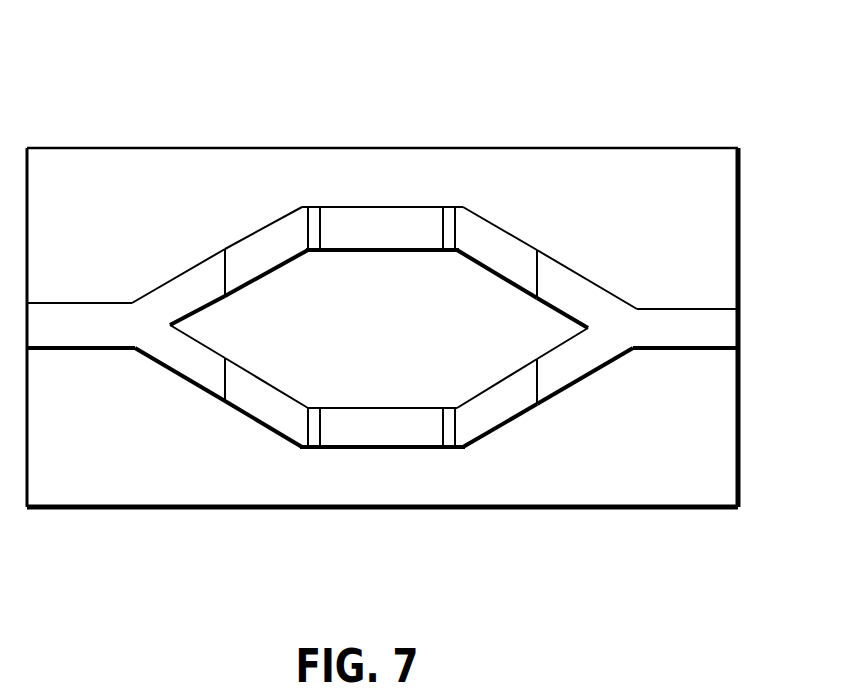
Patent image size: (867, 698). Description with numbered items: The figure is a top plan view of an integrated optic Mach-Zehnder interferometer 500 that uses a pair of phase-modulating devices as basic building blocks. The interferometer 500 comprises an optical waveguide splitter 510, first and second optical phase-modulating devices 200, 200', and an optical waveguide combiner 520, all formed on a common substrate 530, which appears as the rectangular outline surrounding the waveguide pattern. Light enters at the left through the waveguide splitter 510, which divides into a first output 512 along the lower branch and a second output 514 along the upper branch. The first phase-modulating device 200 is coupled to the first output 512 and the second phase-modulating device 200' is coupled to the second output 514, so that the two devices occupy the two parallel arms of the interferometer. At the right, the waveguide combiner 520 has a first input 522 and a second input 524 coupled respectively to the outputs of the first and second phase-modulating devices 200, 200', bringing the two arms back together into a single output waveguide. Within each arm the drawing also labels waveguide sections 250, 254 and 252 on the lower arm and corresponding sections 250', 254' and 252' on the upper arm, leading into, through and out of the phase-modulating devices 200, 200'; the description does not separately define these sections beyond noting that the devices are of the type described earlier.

The integrated optic Mach-Zehnder interferometer 500 is at (415, 304).
The optical waveguide splitter 510 is at (133, 327).
The first output of the waveguide splitter 512 is at (205, 372).
The second output of the waveguide splitter 514 is at (197, 287).
The optical waveguide combiner 520 is at (638, 327).
The first input of the waveguide combiner 522 is at (577, 370).
The second input of the waveguide combiner 524 is at (565, 283).
The common substrate 530 is at (685, 188).
The lower waveguide input section 250 is at (266, 473).
The upper waveguide input section 250' is at (266, 189).
The lower waveguide transition section 254 is at (340, 498).
The upper waveguide transition section 254' is at (348, 166).
The first optical phase-modulating device 200 is at (422, 498).
The second optical phase-modulating device 200' is at (432, 166).
The lower waveguide output section 252 is at (504, 473).
The upper waveguide output section 252' is at (525, 190).